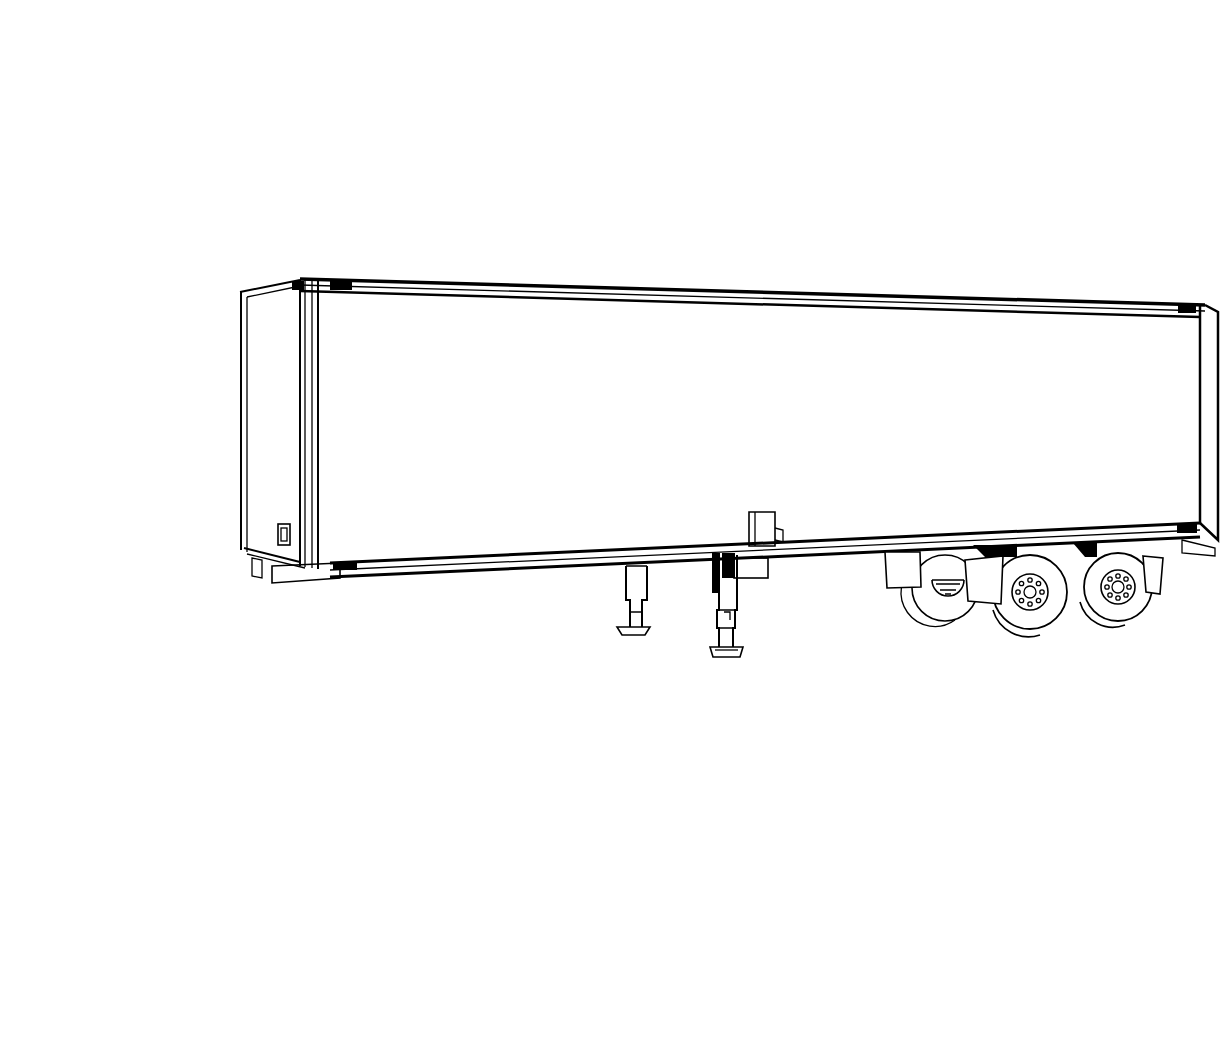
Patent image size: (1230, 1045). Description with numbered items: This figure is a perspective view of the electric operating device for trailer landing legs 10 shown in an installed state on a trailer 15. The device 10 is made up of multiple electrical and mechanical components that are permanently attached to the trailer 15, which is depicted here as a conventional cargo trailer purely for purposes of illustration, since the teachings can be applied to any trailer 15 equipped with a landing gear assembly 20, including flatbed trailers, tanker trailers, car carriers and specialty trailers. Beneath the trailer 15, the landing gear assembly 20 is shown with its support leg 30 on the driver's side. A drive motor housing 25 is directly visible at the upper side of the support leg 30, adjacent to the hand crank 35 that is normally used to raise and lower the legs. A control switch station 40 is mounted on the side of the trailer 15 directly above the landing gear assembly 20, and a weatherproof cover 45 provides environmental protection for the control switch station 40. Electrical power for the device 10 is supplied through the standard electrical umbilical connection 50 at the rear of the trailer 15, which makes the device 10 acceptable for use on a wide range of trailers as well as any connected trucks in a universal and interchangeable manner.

The electric operating device for trailer landing legs 10 is at (229, 197).
The trailer 15 is at (963, 398).
The landing gear assembly 20 is at (591, 572).
The drive motor housing 25 is at (763, 572).
The support leg 30 is at (735, 652).
The hand crank 35 is at (728, 578).
The control switch station 40 is at (762, 522).
The weatherproof cover 45 is at (777, 532).
The electrical umbilical connection 50 is at (283, 540).